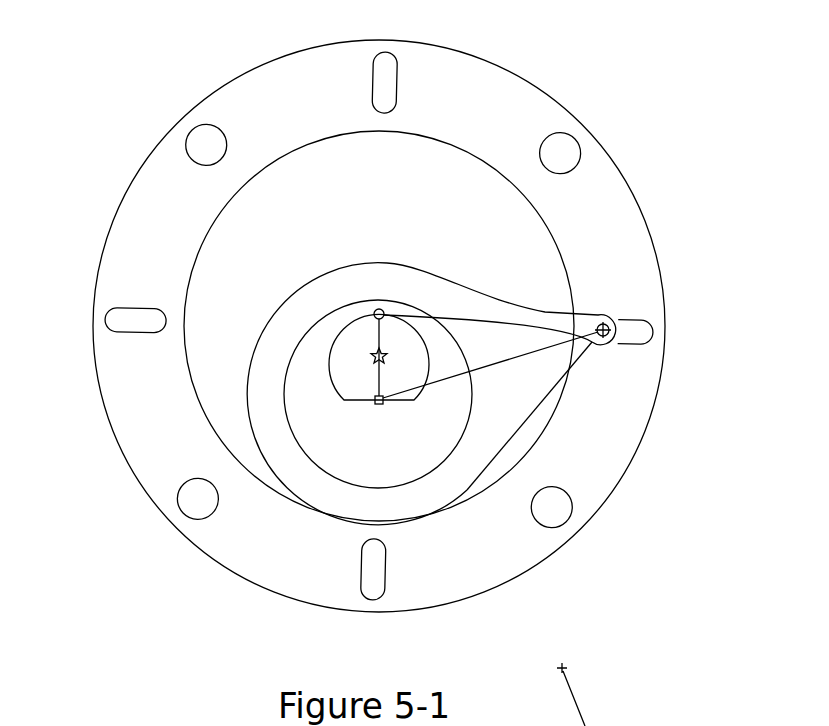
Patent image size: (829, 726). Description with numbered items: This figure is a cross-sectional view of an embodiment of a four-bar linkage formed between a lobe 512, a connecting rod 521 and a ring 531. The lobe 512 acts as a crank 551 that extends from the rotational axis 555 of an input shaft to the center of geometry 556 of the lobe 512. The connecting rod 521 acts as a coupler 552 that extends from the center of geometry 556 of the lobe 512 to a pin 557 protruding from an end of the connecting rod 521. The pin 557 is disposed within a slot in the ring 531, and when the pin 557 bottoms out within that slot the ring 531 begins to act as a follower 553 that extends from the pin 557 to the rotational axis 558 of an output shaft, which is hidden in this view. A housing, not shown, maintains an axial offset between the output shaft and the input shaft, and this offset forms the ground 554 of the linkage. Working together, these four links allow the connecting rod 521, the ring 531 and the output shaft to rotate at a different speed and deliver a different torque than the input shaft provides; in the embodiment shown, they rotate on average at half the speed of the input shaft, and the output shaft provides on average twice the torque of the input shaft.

The ring 531 is at (273, 122).
The rotational axis of output shaft 558 is at (381, 309).
The ground 554 is at (379, 333).
The follower 553 is at (522, 322).
The rotational axis of input shaft 555 is at (375, 355).
The pin 557 is at (609, 337).
The crank 551 is at (379, 378).
The connecting rod 521 is at (522, 383).
The lobe 512 is at (335, 452).
The coupler 552 is at (453, 378).
The center of geometry 556 is at (378, 405).